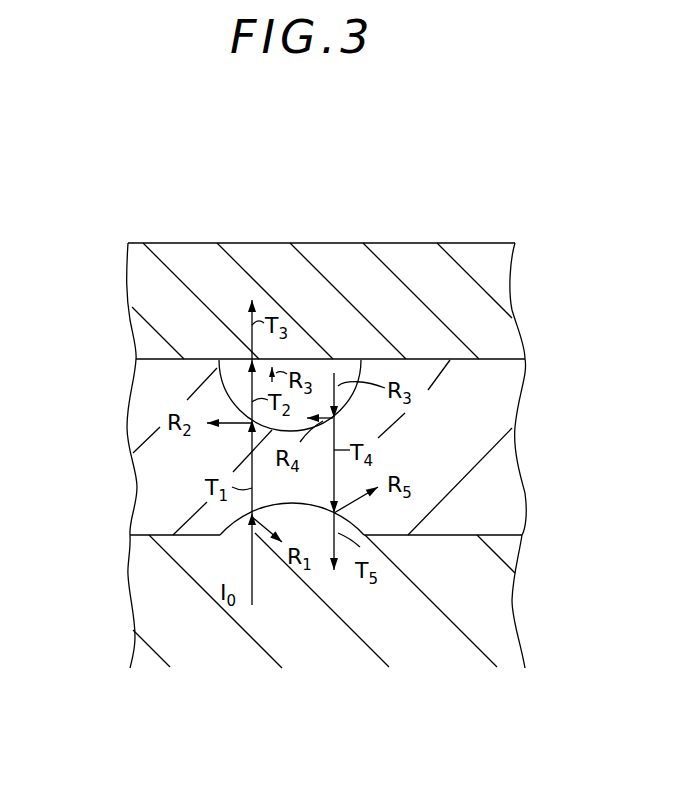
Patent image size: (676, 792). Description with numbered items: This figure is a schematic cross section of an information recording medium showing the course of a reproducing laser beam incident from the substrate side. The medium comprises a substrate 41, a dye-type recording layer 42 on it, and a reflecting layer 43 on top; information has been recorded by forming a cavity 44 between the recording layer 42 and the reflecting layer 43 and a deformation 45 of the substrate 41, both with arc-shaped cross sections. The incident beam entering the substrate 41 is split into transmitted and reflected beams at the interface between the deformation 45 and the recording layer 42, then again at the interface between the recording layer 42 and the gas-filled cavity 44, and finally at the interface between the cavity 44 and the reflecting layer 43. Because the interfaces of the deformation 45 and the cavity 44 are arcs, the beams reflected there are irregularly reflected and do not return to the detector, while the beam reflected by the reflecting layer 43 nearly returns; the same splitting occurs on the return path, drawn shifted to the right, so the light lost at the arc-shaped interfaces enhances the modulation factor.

The substrate 41 is at (135, 603).
The dye-type recording layer 42 is at (136, 458).
The reflecting layer 43 is at (131, 300).
The cavity 44 is at (323, 368).
The deformation 45 is at (305, 524).